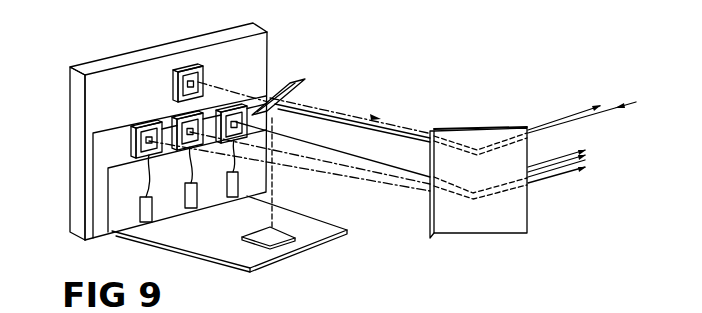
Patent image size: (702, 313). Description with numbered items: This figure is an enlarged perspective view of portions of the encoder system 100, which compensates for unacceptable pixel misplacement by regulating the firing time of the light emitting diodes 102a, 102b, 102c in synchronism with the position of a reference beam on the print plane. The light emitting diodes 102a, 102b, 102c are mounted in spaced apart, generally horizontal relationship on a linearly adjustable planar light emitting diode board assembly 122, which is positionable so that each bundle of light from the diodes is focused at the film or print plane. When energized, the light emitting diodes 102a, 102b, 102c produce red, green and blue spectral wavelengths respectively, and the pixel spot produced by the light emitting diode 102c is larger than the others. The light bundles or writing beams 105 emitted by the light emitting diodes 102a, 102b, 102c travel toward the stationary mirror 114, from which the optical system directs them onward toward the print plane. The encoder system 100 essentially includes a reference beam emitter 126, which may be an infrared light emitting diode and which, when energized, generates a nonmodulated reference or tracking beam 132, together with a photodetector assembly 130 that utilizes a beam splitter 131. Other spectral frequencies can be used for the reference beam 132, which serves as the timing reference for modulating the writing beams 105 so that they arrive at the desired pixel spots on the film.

The encoder system 100 is at (170, 41).
The light emitting diode board assembly 122 is at (256, 24).
The reference beam emitter 126 is at (191, 64).
The light emitting diode 102a is at (137, 127).
The light emitting diode 102b is at (180, 115).
The light emitting diode 102c is at (246, 102).
The beam splitter 131 is at (296, 95).
The reference beam 132 is at (393, 120).
The writing beams 105 is at (413, 180).
The stationary mirror 114 is at (498, 220).
The photodetector assembly 130 is at (285, 234).